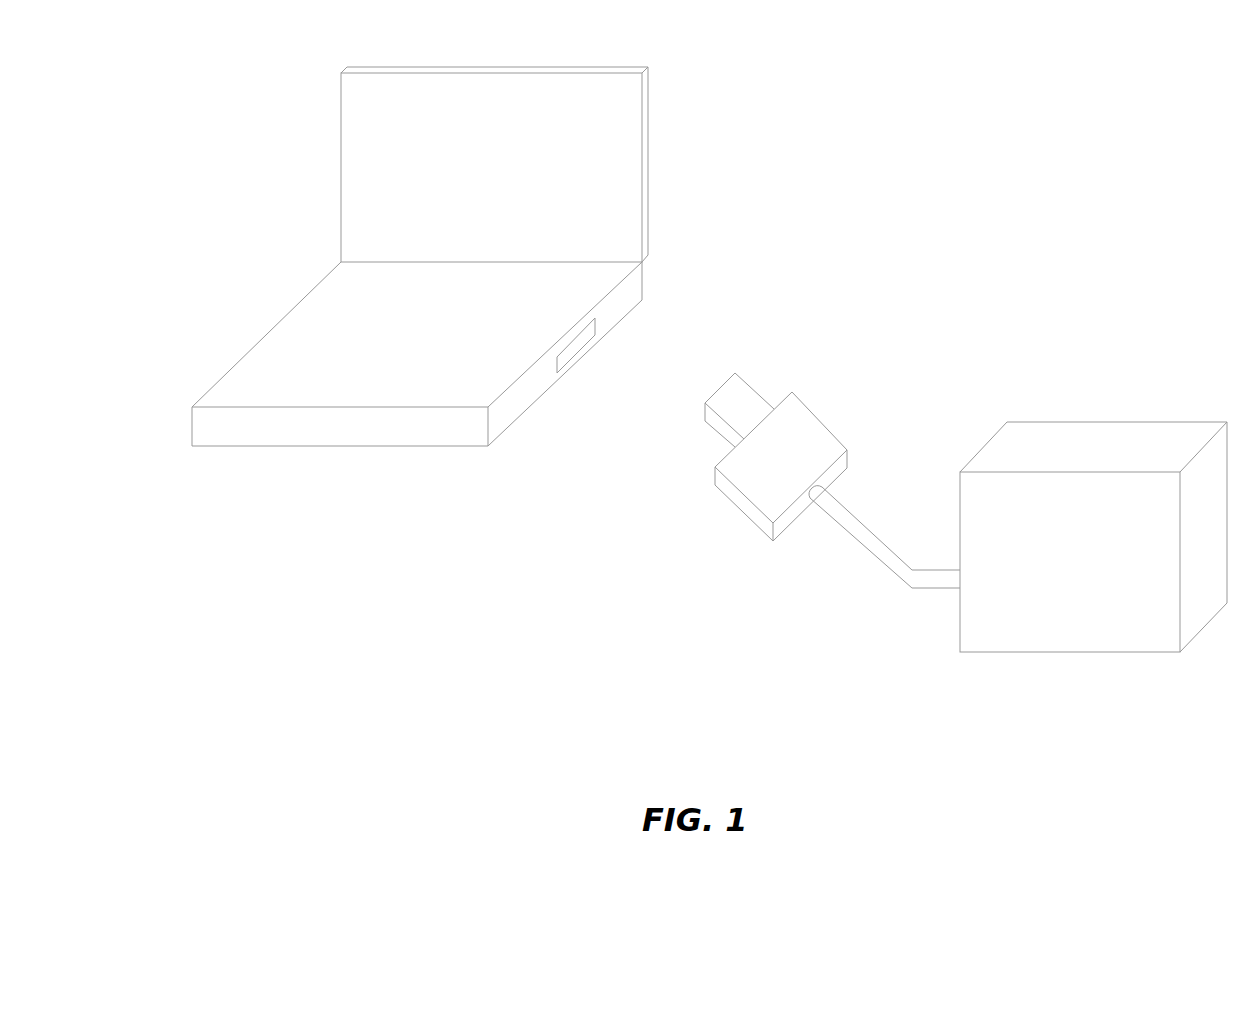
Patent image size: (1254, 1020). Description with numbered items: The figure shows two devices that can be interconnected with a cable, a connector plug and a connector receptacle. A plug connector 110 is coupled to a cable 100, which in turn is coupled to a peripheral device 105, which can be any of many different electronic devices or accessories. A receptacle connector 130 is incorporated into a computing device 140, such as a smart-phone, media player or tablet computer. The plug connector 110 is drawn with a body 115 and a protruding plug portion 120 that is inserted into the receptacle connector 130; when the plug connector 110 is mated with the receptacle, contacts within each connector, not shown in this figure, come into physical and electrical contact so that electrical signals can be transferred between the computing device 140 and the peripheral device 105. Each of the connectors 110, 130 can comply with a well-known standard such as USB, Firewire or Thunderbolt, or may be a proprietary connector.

The cable 100 is at (883, 578).
The peripheral device 105 is at (1073, 686).
The plug connector 110 is at (714, 445).
The connector body 115 is at (772, 467).
The plug 120 is at (740, 397).
The receptacle connector 130 is at (590, 361).
The computing device 140 is at (310, 262).